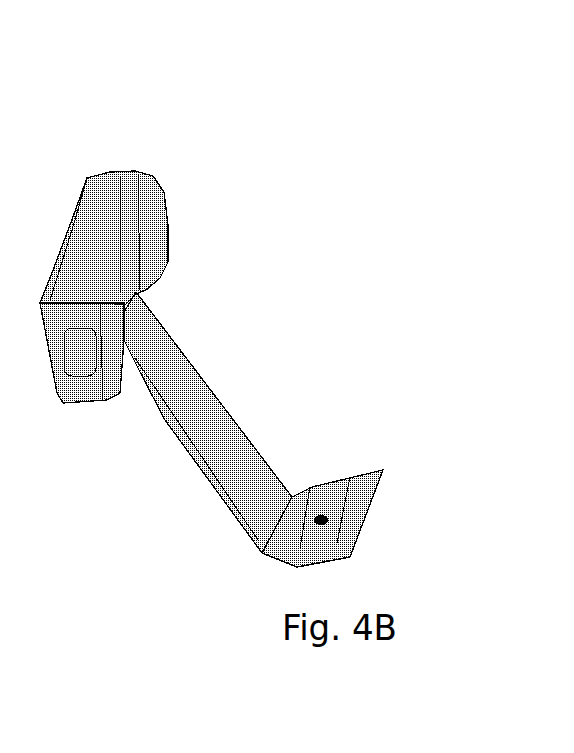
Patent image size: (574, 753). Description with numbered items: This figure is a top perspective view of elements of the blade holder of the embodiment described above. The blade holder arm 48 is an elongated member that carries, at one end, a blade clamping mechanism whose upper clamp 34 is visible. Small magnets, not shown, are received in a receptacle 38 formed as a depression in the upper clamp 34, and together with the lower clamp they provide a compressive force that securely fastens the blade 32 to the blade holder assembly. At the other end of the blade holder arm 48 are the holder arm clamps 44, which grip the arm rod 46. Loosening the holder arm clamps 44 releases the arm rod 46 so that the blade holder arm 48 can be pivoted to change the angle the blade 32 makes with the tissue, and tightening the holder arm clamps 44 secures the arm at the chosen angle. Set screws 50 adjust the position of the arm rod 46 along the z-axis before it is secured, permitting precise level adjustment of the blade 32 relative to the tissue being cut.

The blade 32 is at (366, 527).
The upper clamp 34 is at (350, 463).
The receptacle 38 is at (320, 518).
The holder arm clamps 44 is at (195, 240).
The arm rod 46 is at (77, 347).
The blade holder arm 48 is at (210, 423).
The set screws 50 is at (63, 297).